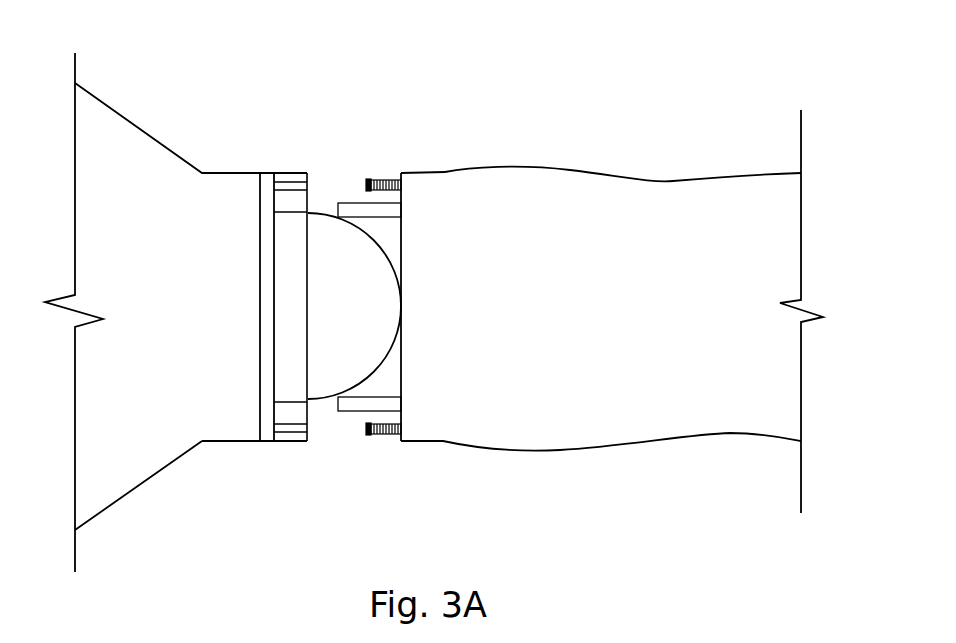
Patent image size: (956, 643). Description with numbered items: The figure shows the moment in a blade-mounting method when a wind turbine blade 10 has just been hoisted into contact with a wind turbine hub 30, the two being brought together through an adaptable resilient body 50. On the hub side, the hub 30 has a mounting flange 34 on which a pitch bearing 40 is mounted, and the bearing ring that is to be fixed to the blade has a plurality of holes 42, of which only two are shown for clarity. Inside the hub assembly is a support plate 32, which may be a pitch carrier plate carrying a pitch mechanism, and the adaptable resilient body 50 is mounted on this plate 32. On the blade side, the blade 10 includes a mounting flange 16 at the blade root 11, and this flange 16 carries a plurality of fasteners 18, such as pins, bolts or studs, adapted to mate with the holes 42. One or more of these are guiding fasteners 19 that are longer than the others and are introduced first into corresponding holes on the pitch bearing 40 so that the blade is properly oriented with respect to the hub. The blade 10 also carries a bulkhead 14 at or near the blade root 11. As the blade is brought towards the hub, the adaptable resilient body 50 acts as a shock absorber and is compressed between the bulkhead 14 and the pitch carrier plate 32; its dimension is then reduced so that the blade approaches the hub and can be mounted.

The wind turbine blade 10 is at (673, 178).
The blade root 11 is at (414, 462).
The bulkhead 14 is at (402, 235).
The mounting flange 16 is at (418, 185).
The fasteners 18 is at (383, 178).
The guiding fasteners 19 is at (372, 397).
The wind turbine hub 30 is at (93, 92).
The support plate 32 is at (270, 430).
The mounting flange 34 is at (233, 441).
The pitch bearing 40 is at (292, 172).
The holes 42 is at (309, 430).
The adaptable resilient body 50 is at (327, 210).